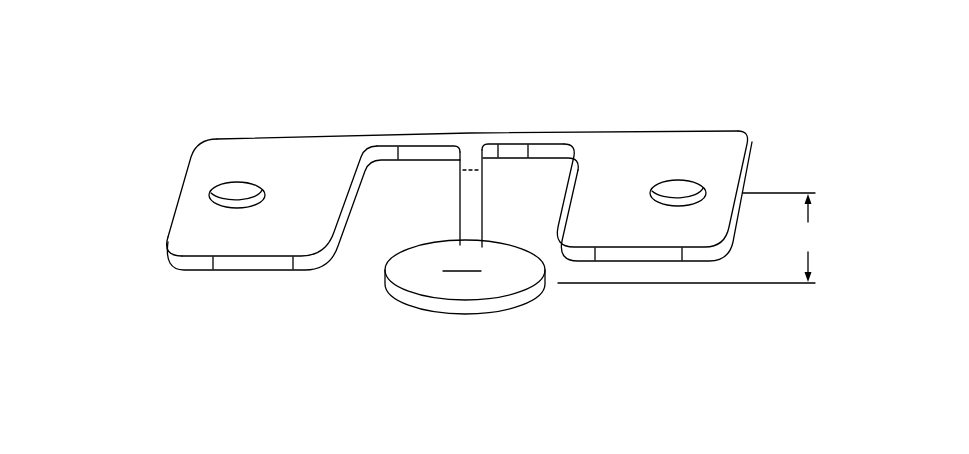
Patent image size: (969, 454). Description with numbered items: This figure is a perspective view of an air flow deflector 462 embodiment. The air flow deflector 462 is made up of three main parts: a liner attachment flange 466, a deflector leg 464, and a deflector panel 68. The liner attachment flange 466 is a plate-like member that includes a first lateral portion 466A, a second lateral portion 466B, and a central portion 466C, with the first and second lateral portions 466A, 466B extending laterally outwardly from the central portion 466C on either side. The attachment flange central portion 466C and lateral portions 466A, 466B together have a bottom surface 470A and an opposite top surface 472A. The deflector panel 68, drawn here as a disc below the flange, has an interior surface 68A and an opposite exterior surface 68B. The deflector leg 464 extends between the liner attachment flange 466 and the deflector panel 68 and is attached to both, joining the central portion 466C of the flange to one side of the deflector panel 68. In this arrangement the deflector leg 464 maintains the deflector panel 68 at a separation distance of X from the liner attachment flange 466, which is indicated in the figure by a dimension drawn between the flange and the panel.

The air flow deflector 462 is at (722, 105).
The liner attachment flange 466 is at (391, 110).
The first lateral portion 466A is at (158, 213).
The second lateral portion 466B is at (765, 125).
The central portion 466C is at (503, 115).
The deflector leg 464 is at (458, 206).
The bottom surface 470A is at (195, 270).
The top surface 472A is at (167, 235).
The deflector panel 68 is at (405, 318).
The interior surface 68A is at (490, 298).
The exterior surface 68B is at (455, 320).
The separation distance X is at (686, 238).